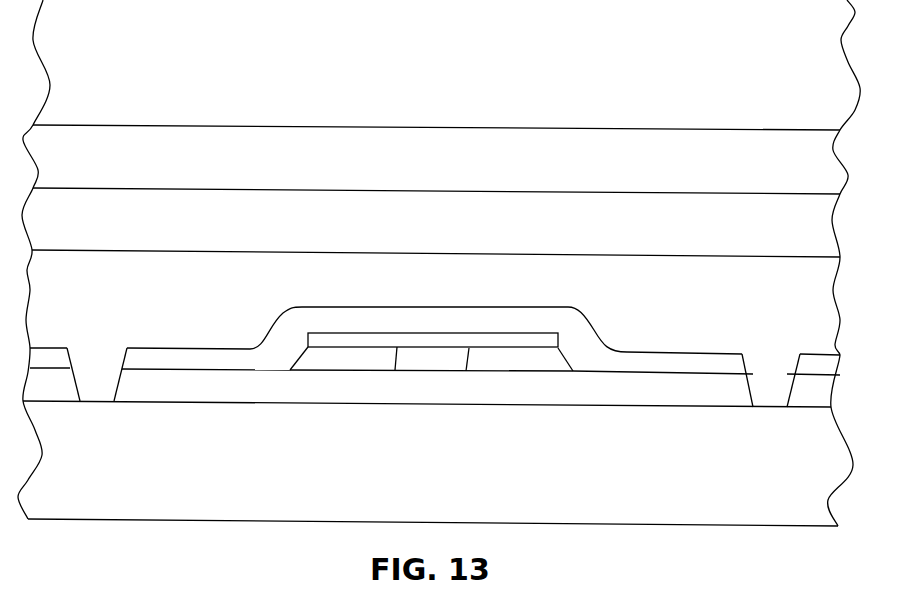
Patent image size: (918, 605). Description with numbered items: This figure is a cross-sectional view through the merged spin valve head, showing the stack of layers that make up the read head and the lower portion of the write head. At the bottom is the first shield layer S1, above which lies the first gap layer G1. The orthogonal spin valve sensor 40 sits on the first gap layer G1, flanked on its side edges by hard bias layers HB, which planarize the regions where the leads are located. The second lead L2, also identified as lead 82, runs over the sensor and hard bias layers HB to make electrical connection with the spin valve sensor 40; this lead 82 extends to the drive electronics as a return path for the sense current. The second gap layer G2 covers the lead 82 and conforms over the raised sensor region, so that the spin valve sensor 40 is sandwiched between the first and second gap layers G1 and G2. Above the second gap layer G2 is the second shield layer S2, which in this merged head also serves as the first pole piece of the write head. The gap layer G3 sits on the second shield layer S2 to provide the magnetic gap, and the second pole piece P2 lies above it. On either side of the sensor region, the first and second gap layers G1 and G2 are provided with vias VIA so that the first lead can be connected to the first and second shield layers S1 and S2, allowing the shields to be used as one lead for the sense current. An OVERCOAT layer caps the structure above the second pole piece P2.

The second lead 82 is at (367, 337).
The orthogonal spin valve sensor 40 is at (459, 371).
The second lead L2 is at (503, 342).
The second gap layer G2 is at (409, 328).
The second pole piece P2 is at (436, 171).
The gap layer G3 is at (436, 234).
The second shield layer S2 is at (435, 315).
The first gap layer G1 is at (431, 387).
The first shield layer S1 is at (433, 490).
The hard bias layers HB is at (431, 359).
The vias VIA is at (433, 368).
The overcoat OVERCOAT is at (436, 65).